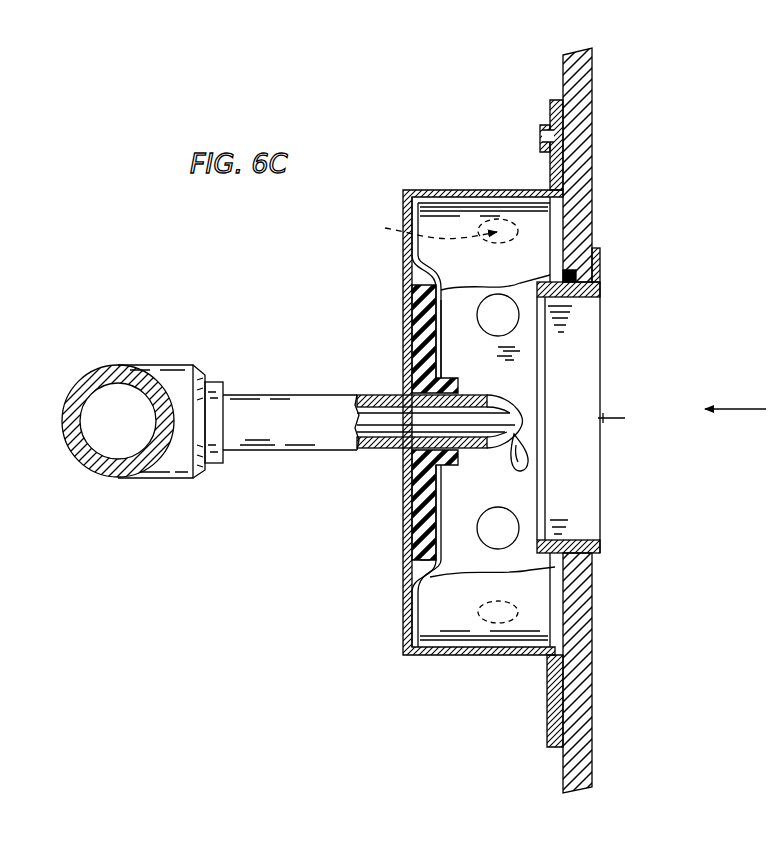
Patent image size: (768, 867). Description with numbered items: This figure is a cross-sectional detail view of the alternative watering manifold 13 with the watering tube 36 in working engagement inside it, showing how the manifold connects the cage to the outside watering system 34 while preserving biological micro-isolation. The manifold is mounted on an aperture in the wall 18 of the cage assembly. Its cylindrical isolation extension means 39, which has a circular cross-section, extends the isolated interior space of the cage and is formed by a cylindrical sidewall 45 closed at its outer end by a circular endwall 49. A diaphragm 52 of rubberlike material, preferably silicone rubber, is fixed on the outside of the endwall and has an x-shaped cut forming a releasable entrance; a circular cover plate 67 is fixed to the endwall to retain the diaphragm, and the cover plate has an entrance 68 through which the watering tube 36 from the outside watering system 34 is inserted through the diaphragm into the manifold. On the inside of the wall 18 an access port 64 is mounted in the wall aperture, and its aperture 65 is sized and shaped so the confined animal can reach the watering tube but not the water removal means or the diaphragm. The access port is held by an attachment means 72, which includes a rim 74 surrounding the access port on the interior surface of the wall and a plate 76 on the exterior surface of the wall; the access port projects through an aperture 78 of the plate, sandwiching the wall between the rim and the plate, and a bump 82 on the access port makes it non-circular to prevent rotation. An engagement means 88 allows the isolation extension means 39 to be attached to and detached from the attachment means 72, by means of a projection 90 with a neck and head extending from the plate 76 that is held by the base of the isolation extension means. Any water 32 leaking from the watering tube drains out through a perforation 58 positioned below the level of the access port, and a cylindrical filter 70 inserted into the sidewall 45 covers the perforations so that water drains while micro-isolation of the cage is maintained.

The watering manifold 13 is at (479, 700).
The wall 18 is at (563, 80).
The water 32 is at (512, 462).
The outside watering system 34 is at (100, 365).
The watering tube 36 is at (303, 395).
The isolation extension means 39 is at (408, 188).
The cylindrical sidewall 45 is at (482, 366).
The circular endwall 49 is at (441, 352).
The diaphragm 52 is at (403, 515).
The perforation 58 is at (385, 228).
The access port 64 is at (580, 477).
The aperture 65 is at (624, 419).
The cover plate 67 is at (403, 310).
The entrance 68 is at (397, 387).
The filter 70 is at (462, 220).
The attachment means 72 is at (572, 288).
The rim 74 is at (600, 252).
The plate 76 is at (562, 234).
The aperture 78 is at (597, 300).
The bump 82 is at (555, 280).
The engagement means 88 is at (541, 128).
The projection 90 is at (540, 145).